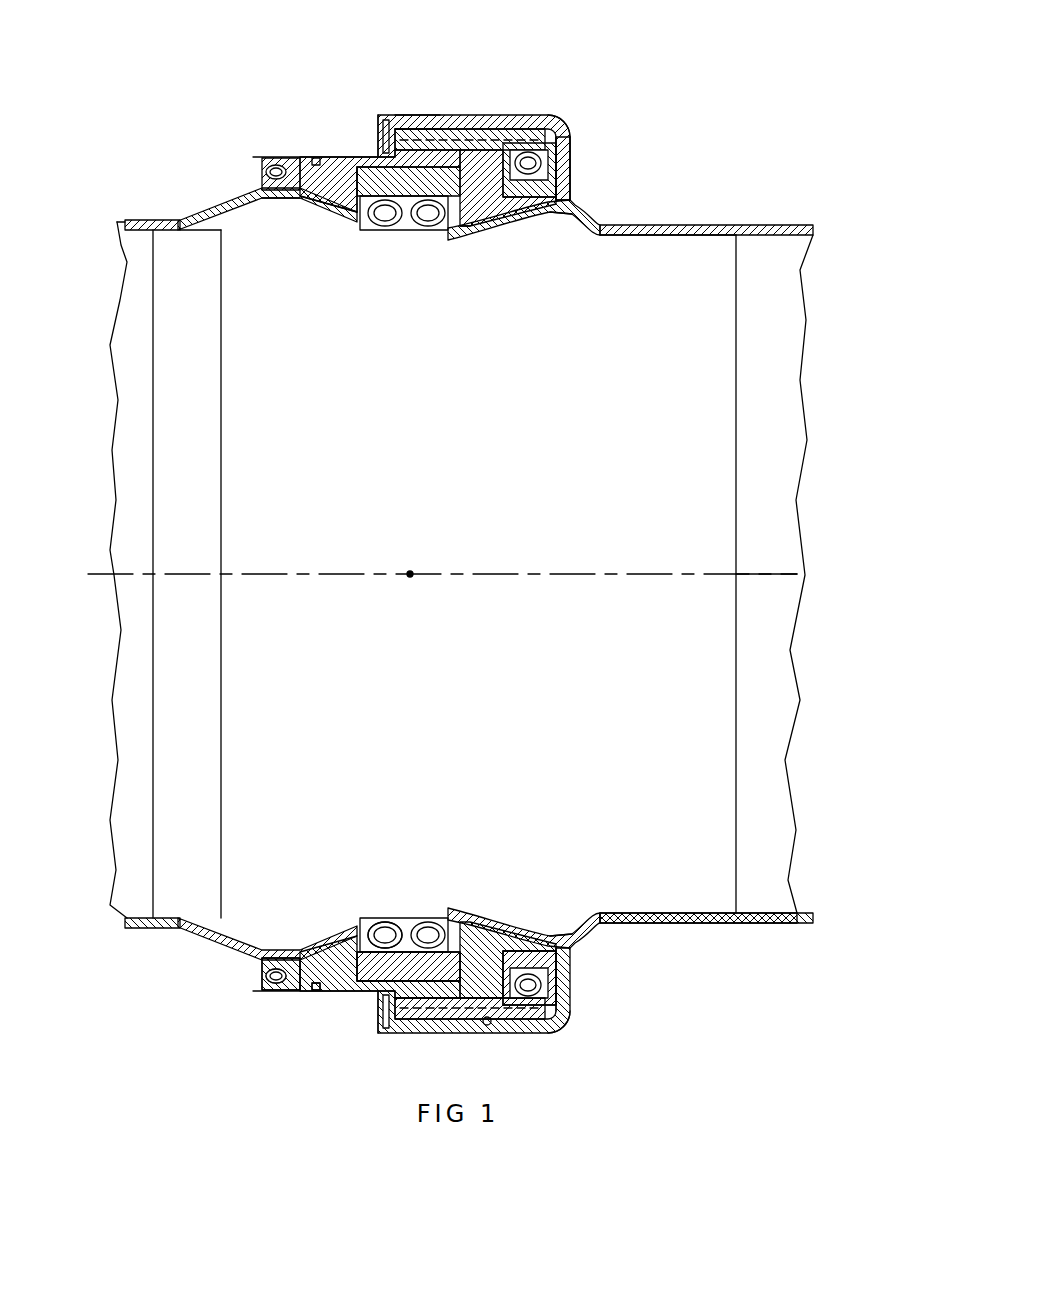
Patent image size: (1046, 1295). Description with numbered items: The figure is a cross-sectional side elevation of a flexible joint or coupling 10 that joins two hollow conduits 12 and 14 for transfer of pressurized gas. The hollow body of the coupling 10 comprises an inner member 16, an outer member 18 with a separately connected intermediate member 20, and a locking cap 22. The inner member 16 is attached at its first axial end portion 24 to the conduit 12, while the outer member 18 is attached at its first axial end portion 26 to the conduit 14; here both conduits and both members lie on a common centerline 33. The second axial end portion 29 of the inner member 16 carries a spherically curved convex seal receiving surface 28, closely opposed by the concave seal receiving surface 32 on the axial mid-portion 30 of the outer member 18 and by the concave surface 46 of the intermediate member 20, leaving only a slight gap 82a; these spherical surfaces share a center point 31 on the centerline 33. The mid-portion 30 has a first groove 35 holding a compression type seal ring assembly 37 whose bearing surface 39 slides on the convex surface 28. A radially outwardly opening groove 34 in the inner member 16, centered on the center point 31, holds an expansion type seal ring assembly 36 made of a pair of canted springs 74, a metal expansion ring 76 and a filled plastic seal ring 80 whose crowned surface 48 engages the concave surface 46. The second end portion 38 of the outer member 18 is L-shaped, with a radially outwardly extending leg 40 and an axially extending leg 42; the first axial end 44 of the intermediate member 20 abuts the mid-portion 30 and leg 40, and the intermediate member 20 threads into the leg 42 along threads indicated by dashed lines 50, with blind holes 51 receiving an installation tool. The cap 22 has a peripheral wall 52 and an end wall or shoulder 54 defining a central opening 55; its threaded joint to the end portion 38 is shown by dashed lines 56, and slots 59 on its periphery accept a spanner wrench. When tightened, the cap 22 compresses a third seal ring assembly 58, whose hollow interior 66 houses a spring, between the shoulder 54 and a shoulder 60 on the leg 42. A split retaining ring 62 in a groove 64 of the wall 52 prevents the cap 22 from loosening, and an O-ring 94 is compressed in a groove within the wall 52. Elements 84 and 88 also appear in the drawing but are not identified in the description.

The flexible coupling 10 is at (690, 120).
The conduit 12 is at (770, 222).
The conduit 14 is at (140, 220).
The inner member 16 is at (465, 232).
The outer member 18 is at (306, 145).
The intermediate member 20 is at (527, 205).
The locking cap 22 is at (568, 130).
The first axial end portion 24 is at (696, 238).
The first axial end portion 26 is at (118, 238).
The convex seal receiving surface 28 is at (345, 155).
The second axial end portion 29 is at (603, 213).
The axial mid-portion 30 is at (266, 160).
The center point 31 is at (411, 573).
The concave seal receiving surface 32 is at (330, 205).
The common centerline 33 is at (705, 573).
The groove 34 is at (394, 936).
The first groove 35 is at (290, 972).
The seal ring assembly 36 is at (464, 925).
The first seal ring assembly 37 is at (263, 170).
The second end portion 38 is at (468, 143).
The bearing surface 39 is at (287, 200).
The radially outwardly extending leg 40 is at (384, 140).
The axially extending leg 42 is at (562, 120).
The first axial end 44 is at (352, 205).
The concave surface 46 is at (474, 224).
The spherically crowned surface 48 is at (437, 998).
The threaded portions 50 is at (440, 113).
The blind holes 51 is at (535, 208).
The peripheral wall 52 is at (406, 115).
The cap end wall 54 is at (574, 152).
The central opening 55 is at (580, 213).
The threaded portions 56 is at (447, 130).
The third seal ring assembly 58 is at (576, 180).
The slots 59 is at (536, 115).
The shoulder 60 is at (560, 990).
The retaining ring 62 is at (378, 117).
The groove 64 is at (384, 1032).
The hollow interior 66 is at (548, 185).
The canted springs 74 is at (430, 228).
The metal expansion ring 76 is at (380, 233).
The plastic seal ring 80 is at (450, 232).
The gap 82a is at (215, 232).
The notch 84 is at (313, 158).
The seal housing 88 is at (268, 165).
The O-ring 94 is at (490, 1024).